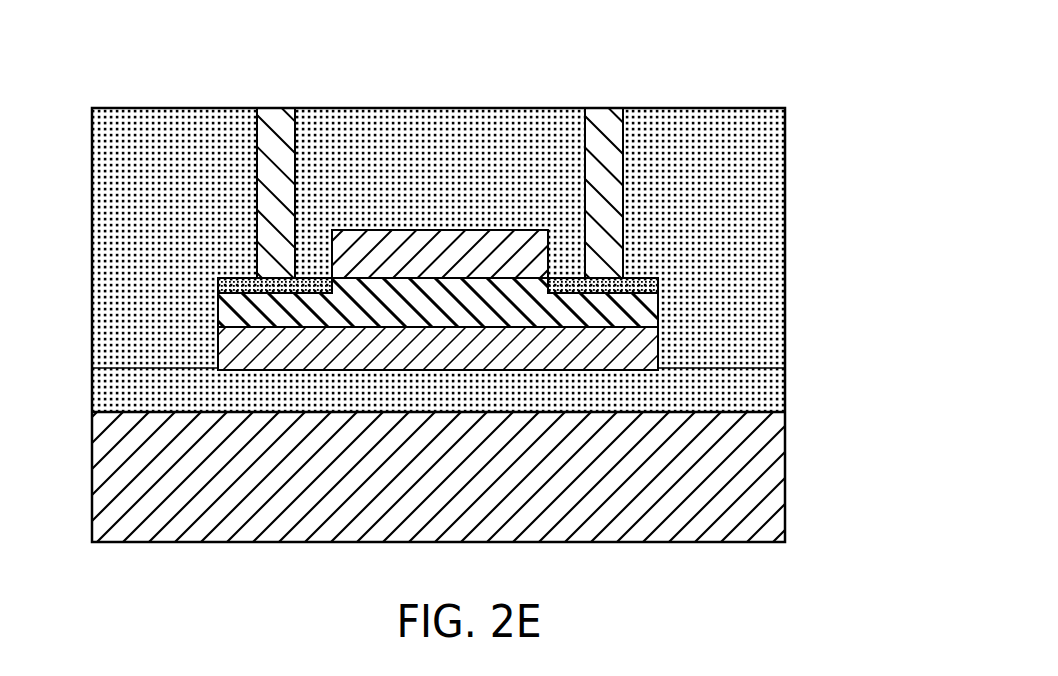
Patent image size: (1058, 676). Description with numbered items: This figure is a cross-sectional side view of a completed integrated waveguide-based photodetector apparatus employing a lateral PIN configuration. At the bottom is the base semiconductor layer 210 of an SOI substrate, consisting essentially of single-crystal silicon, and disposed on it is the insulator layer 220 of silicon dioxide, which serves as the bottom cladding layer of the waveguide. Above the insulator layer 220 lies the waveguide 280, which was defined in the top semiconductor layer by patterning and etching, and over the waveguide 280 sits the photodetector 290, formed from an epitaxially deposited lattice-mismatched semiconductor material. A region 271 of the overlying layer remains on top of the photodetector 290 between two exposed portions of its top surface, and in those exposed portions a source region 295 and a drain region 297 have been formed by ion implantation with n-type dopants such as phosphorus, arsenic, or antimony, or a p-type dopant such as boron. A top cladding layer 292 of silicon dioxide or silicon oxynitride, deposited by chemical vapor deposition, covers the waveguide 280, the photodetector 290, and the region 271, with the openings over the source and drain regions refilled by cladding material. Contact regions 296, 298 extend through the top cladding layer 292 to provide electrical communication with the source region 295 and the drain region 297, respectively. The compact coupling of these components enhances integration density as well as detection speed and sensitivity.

The base semiconductor layer 210 is at (110, 504).
The insulator layer 220 is at (112, 389).
The region of the layer 270 271 is at (444, 231).
The waveguide 280 is at (227, 352).
The photodetector 290 is at (220, 307).
The top cladding layer 292 is at (766, 110).
The source region 295 is at (657, 286).
The contact region 296 is at (612, 117).
The drain region 297 is at (220, 281).
The contact region 298 is at (279, 118).